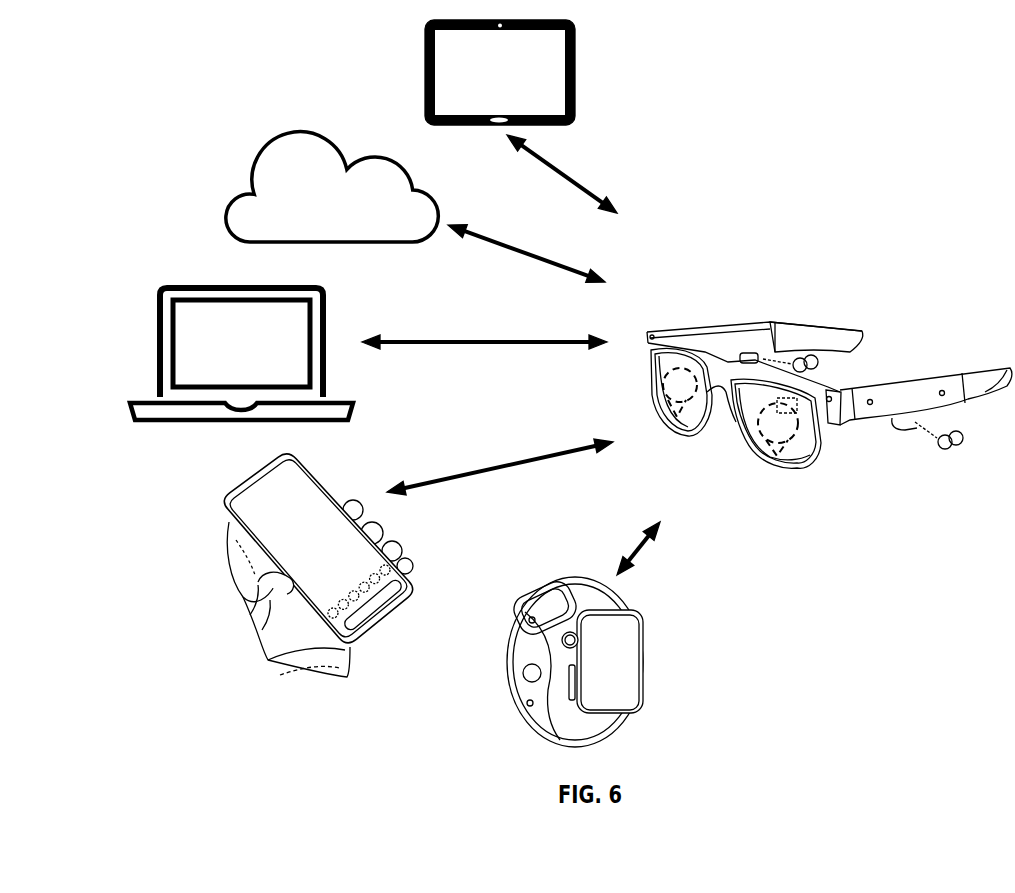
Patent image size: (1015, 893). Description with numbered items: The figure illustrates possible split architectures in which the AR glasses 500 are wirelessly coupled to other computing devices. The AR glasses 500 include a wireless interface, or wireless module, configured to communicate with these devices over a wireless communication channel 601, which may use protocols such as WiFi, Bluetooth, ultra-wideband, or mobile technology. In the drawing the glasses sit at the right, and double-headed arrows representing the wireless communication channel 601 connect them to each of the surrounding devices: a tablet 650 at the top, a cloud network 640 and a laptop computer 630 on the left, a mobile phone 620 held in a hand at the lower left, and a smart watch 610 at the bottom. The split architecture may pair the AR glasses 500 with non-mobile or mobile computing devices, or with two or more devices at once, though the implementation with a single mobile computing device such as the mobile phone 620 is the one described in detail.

The AR glasses 500 is at (695, 323).
The wireless communication channel 601 is at (521, 250).
The smart watch 610 is at (565, 578).
The mobile phone 620 is at (235, 490).
The laptop computer 630 is at (160, 297).
The cloud network 640 is at (266, 166).
The tablet 650 is at (425, 50).